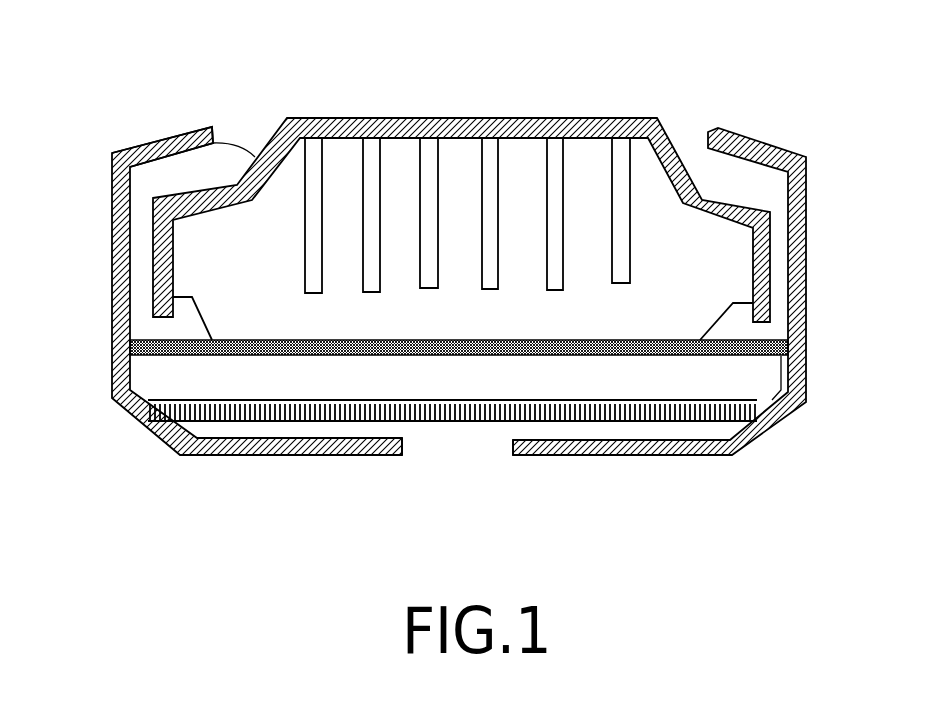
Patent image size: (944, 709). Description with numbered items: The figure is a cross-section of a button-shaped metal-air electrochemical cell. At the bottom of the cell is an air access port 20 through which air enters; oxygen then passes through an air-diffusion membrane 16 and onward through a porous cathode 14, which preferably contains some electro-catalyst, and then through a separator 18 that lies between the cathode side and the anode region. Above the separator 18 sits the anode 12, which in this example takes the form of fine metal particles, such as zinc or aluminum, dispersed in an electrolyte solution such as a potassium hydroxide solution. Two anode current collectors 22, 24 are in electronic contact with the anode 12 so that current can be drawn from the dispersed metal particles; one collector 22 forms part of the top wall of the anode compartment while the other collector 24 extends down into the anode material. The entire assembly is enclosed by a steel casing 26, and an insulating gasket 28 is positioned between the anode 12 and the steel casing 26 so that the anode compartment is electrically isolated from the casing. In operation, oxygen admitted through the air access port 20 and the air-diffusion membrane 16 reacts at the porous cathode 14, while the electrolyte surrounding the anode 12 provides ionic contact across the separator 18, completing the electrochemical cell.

The anode 12 is at (393, 158).
The porous cathode 14 is at (758, 383).
The air-diffusion membrane 16 is at (640, 425).
The separator 18 is at (243, 345).
The air access port 20 is at (467, 450).
The anode current collector 22 is at (523, 118).
The anode current collector 24 is at (555, 188).
The steel casing 26 is at (160, 155).
The insulating gasket 28 is at (223, 163).